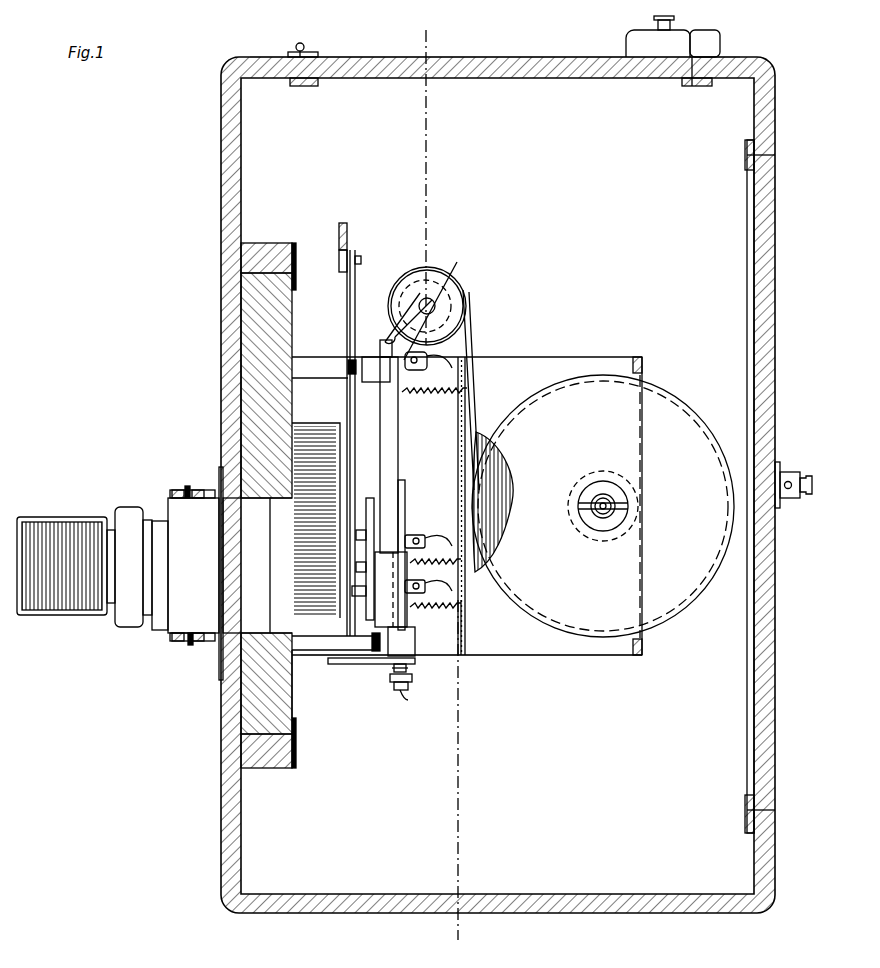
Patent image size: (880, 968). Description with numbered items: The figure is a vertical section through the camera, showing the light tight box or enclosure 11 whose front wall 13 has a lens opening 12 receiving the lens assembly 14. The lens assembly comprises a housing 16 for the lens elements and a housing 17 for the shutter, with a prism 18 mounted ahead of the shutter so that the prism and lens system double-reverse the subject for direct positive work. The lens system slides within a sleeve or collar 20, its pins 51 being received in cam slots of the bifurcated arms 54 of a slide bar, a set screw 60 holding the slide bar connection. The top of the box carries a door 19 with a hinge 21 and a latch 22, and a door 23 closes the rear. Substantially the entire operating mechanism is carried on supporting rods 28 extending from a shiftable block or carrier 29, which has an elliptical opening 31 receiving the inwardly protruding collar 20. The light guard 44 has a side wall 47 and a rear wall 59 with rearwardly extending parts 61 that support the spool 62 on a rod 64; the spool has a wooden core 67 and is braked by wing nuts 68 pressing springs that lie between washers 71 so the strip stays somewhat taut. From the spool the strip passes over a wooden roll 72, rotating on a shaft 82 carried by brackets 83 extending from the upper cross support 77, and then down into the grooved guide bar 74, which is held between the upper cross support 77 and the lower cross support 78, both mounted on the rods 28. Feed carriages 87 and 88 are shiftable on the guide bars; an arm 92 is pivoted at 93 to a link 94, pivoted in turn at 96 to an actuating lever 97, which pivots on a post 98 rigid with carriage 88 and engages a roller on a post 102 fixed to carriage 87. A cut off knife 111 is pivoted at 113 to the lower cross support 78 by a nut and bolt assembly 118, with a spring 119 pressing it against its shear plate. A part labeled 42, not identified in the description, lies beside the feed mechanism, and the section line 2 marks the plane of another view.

The section line 2 is at (470, 38).
The light tight box 11 is at (622, 905).
The lens opening 12 is at (238, 628).
The front wall 13 is at (240, 763).
The lens assembly 14 is at (108, 628).
The lens housing 16 is at (162, 582).
The shutter housing 17 is at (128, 630).
The prism 18 is at (60, 617).
The door 19 is at (538, 62).
The collar 20 is at (193, 565).
The hinge 21 is at (306, 44).
The latch 22 is at (706, 32).
The rear door 23 is at (770, 200).
The supporting rods 28 is at (310, 380).
The carrier 29 is at (310, 700).
The elliptical opening 31 is at (270, 500).
The plate 42 is at (405, 493).
The light guard 44 is at (572, 660).
The side wall 47 is at (440, 400).
The pins 51 is at (196, 478).
The bifurcated arms 54 is at (178, 492).
The rear wall 59 is at (466, 635).
The set screw 60 is at (316, 425).
The support parts 61 is at (590, 356).
The spool 62 is at (505, 470).
The rod 64 is at (598, 510).
The core 67 is at (598, 472).
The wing nuts 68 is at (612, 500).
The washers 71 is at (610, 482).
The roll 72 is at (470, 298).
The guide bar 74 is at (398, 462).
The upper cross support 77 is at (375, 355).
The lower cross support 78 is at (410, 633).
The shaft 82 is at (432, 369).
The brackets 83 is at (445, 330).
The feed carriage 87 is at (400, 580).
The feed carriage 88 is at (412, 520).
The arm 92 is at (347, 236).
The pivot 93 is at (361, 262).
The link 94 is at (355, 298).
The pivot 96 is at (356, 567).
The actuating lever 97 is at (364, 520).
The post 98 is at (356, 535).
The post 102 is at (352, 591).
The cut off knife 111 is at (372, 664).
The pivot 113 is at (408, 700).
The nut and bolt assembly 118 is at (412, 678).
The spring 119 is at (408, 670).